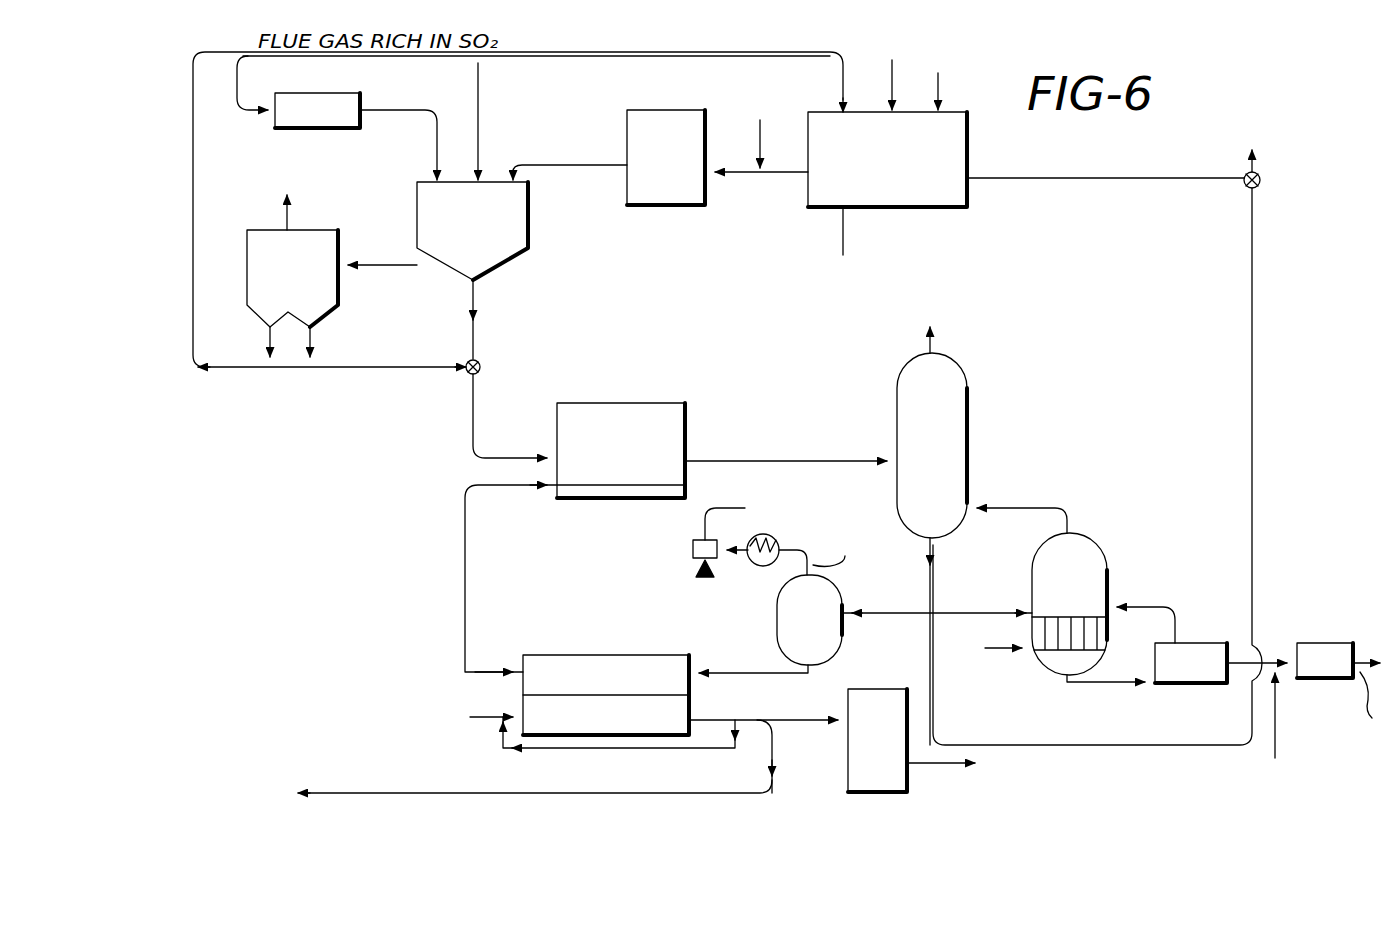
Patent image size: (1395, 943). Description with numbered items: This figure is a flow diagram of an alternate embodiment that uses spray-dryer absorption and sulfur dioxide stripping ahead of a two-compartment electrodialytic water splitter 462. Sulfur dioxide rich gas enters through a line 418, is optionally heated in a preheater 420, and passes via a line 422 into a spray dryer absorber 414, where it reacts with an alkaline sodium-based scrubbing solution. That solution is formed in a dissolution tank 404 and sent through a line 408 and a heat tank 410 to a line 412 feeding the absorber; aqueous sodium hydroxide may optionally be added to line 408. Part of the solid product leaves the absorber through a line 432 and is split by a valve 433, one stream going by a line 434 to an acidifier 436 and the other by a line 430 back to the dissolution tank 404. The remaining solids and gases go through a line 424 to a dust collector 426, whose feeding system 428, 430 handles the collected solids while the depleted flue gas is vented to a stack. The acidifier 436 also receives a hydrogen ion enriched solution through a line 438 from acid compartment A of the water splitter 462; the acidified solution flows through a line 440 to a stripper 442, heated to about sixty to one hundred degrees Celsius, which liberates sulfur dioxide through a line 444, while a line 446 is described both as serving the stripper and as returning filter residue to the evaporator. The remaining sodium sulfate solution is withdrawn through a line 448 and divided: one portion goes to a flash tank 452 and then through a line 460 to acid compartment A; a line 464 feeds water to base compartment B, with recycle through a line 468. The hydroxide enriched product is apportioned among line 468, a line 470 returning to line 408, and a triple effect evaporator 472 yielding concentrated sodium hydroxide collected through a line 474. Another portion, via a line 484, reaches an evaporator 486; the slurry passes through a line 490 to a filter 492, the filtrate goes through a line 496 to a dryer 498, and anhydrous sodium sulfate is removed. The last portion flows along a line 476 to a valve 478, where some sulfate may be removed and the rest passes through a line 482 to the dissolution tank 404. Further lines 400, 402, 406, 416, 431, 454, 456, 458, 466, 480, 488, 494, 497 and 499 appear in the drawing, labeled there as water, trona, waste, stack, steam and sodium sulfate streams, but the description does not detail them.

The water feed line to dissolver 400 is at (940, 96).
The trona feed line 402 is at (892, 84).
The dissolution tank 404 is at (967, 135).
The waste discharge line 406 is at (845, 236).
The line 408 is at (790, 175).
The heat tank 410 is at (707, 230).
The line 412 is at (585, 146).
The spray dryer absorber 414 is at (528, 212).
The water feed line to spray dryer absorber 416 is at (480, 140).
The line 418 is at (255, 115).
The preheater 420 is at (340, 72).
The line 422 is at (432, 114).
The line 424 is at (398, 232).
The dust collector 426 is at (338, 283).
The feeding system 428 is at (268, 333).
The line 430 is at (648, 54).
The flue gas to stack line 431 is at (287, 220).
The line 432 is at (478, 336).
The valve 433 is at (481, 373).
The line 434 is at (473, 428).
The acidifier 436 is at (668, 380).
The line 438 is at (452, 600).
The line 440 is at (832, 435).
The stripper 442 is at (967, 435).
The line 444 is at (933, 342).
The line 446 is at (1010, 508).
The line 448 is at (935, 555).
The flash tank 452 is at (777, 603).
The line to flash tank 454 is at (844, 549).
The heat exchanger 456 is at (808, 515).
The control valve 458 is at (692, 549).
The line 460 is at (770, 652).
The two compartment electrodialytic water splitter 462 is at (678, 635).
The line 464 is at (495, 718).
The line to triple effect evaporator 466 is at (798, 703).
The line 468 is at (655, 752).
The line 470 is at (760, 125).
The triple effect evaporator 472 is at (904, 665).
The line 474 is at (930, 765).
The line 476 is at (1255, 385).
The valve 478 is at (1258, 187).
The outlet line 480 is at (1255, 168).
The line 482 is at (1185, 160).
The line 484 is at (953, 613).
The evaporator 486 is at (1103, 556).
The steam feed line 488 is at (985, 650).
The line 490 is at (1133, 680).
The filter 492 is at (1192, 643).
The filtrate return line 494 is at (1160, 580).
The line 496 is at (1268, 666).
The line 497 is at (1275, 740).
The dryer 498 is at (1305, 643).
The sodium sulfate product line 499 is at (1362, 660).